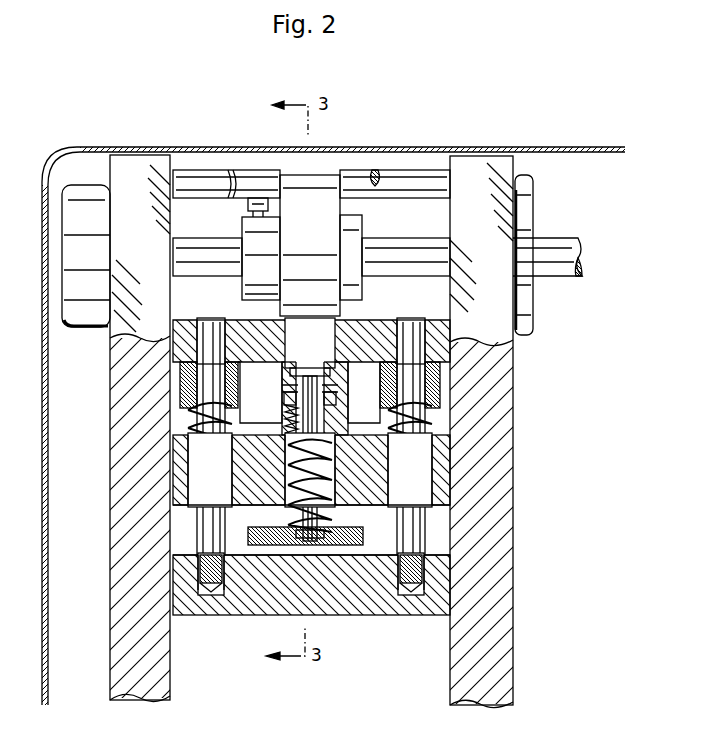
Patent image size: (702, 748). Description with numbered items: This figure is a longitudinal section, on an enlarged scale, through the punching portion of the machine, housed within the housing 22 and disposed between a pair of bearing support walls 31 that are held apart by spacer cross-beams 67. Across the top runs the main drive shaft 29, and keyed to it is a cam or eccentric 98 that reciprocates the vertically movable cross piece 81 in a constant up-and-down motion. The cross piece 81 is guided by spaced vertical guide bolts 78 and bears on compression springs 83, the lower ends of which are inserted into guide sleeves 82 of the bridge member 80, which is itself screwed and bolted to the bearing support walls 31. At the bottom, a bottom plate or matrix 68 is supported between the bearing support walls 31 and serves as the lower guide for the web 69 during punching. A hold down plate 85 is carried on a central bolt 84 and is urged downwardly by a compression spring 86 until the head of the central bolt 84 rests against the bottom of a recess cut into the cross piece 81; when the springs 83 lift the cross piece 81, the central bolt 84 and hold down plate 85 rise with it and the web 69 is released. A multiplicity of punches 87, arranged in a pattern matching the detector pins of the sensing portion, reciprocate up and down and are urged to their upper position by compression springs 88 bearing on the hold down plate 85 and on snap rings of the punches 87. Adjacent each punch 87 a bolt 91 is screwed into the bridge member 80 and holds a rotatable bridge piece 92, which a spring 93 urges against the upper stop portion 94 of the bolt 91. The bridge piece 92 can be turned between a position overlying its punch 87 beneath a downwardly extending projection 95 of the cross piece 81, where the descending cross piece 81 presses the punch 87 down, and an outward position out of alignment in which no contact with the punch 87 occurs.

The housing 22 is at (44, 500).
The shaft 29 is at (398, 246).
The bearing support wall 31 is at (122, 466).
The spacer cross-beam 67 is at (242, 178).
The bottom plate 68 is at (352, 606).
The web 69 is at (394, 542).
The vertical guide bolt 78 is at (200, 525).
The bridge member 80 is at (356, 448).
The cross piece 81 is at (240, 320).
The guide sleeve 82 is at (180, 385).
The compression spring 83 is at (180, 420).
The central bolt 84 is at (306, 368).
The hold down plate 85 is at (262, 545).
The compression spring 86 is at (334, 517).
The punch 87 is at (296, 530).
The compression spring 88 is at (295, 538).
The bolt 91 is at (284, 400).
The rotatable bridge piece 92 is at (282, 388).
The spring 93 is at (285, 428).
The upper stop portion 94 is at (340, 385).
The downwardly extending projection 95 is at (340, 412).
The cam or eccentric 98 is at (320, 195).